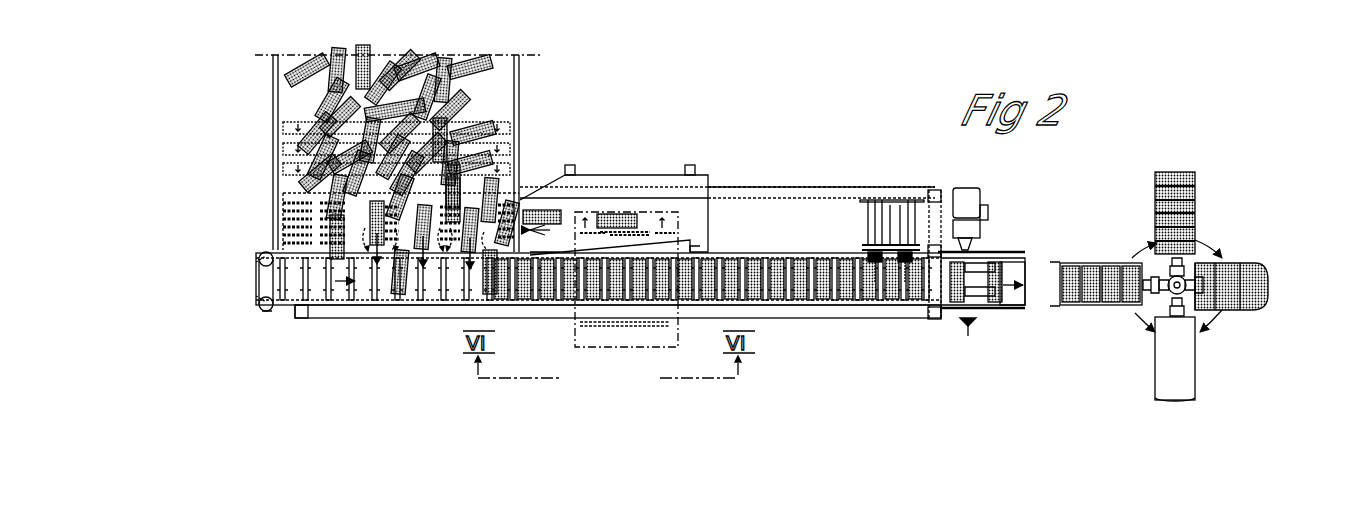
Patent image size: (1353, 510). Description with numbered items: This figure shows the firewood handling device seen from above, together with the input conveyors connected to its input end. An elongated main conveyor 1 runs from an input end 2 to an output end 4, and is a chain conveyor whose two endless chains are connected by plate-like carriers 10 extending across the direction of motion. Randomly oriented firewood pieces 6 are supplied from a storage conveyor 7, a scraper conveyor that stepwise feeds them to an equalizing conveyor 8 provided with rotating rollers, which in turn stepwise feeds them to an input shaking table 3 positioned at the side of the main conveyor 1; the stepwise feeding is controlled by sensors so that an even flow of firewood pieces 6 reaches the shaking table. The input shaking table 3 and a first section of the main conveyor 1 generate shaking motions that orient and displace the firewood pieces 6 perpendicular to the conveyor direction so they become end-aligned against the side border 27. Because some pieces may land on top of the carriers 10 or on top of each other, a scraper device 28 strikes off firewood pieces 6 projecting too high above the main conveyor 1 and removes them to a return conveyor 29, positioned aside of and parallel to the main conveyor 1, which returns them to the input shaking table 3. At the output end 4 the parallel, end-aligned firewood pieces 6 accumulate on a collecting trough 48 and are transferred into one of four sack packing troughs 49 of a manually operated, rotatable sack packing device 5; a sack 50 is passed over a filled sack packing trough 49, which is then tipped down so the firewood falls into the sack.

The main conveyor 1 is at (258, 322).
The input end 2 is at (244, 282).
The input shaking table 3 is at (292, 213).
The output end 4 is at (987, 323).
The sack packing device 5 is at (1230, 230).
The firewood pieces 6 is at (441, 58).
The storage conveyor 7 is at (503, 86).
The equalizing conveyor 8 is at (503, 148).
The carriers 10 is at (375, 284).
The side border 27 is at (334, 308).
The scraper device 28 is at (633, 355).
The return conveyor 29 is at (630, 150).
The collecting trough 48 is at (1040, 272).
The sack packing troughs 49 is at (1097, 268).
The sack 50 is at (1262, 288).